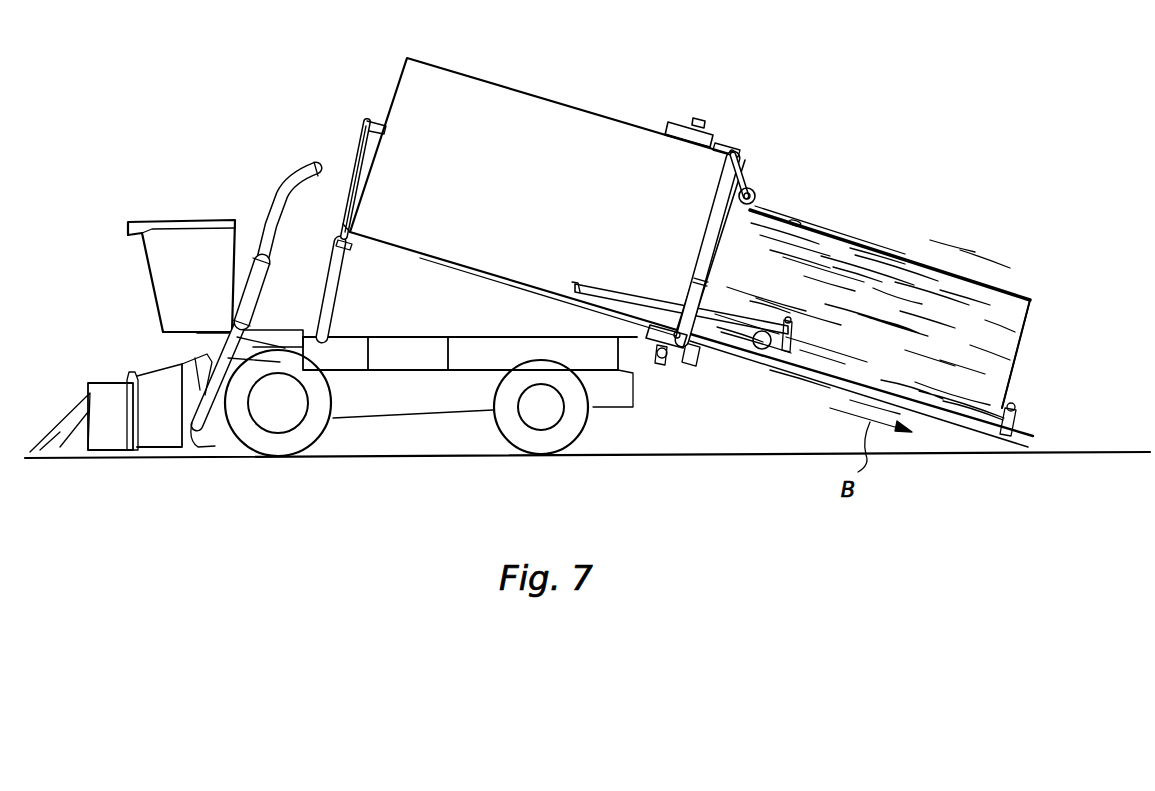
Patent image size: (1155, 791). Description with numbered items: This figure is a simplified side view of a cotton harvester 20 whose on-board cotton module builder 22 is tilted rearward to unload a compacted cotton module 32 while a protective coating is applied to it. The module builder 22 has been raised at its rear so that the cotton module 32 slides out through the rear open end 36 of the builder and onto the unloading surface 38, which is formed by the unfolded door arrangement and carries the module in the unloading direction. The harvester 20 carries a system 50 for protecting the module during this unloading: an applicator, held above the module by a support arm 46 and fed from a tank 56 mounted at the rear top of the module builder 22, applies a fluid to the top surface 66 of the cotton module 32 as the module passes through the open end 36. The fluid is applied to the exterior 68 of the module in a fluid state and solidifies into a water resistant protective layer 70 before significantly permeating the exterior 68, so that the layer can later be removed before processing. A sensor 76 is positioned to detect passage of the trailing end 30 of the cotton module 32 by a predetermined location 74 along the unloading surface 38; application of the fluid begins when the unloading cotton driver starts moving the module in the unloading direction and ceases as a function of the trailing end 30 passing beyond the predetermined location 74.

The cotton harvester 20 is at (877, 58).
The cotton module builder 22 is at (537, 97).
The trailing end 30 is at (690, 280).
The cotton module 32 is at (1023, 333).
The rear open end 36 is at (712, 243).
The unloading surface 38 is at (753, 345).
The support arm 46 is at (728, 182).
The system 50 is at (785, 143).
The tank 56 is at (679, 118).
The top surface 66 is at (861, 247).
The exterior 68 is at (910, 223).
The protective layer 70 is at (973, 280).
The predetermined location 74 is at (722, 342).
The sensor 76 is at (695, 352).